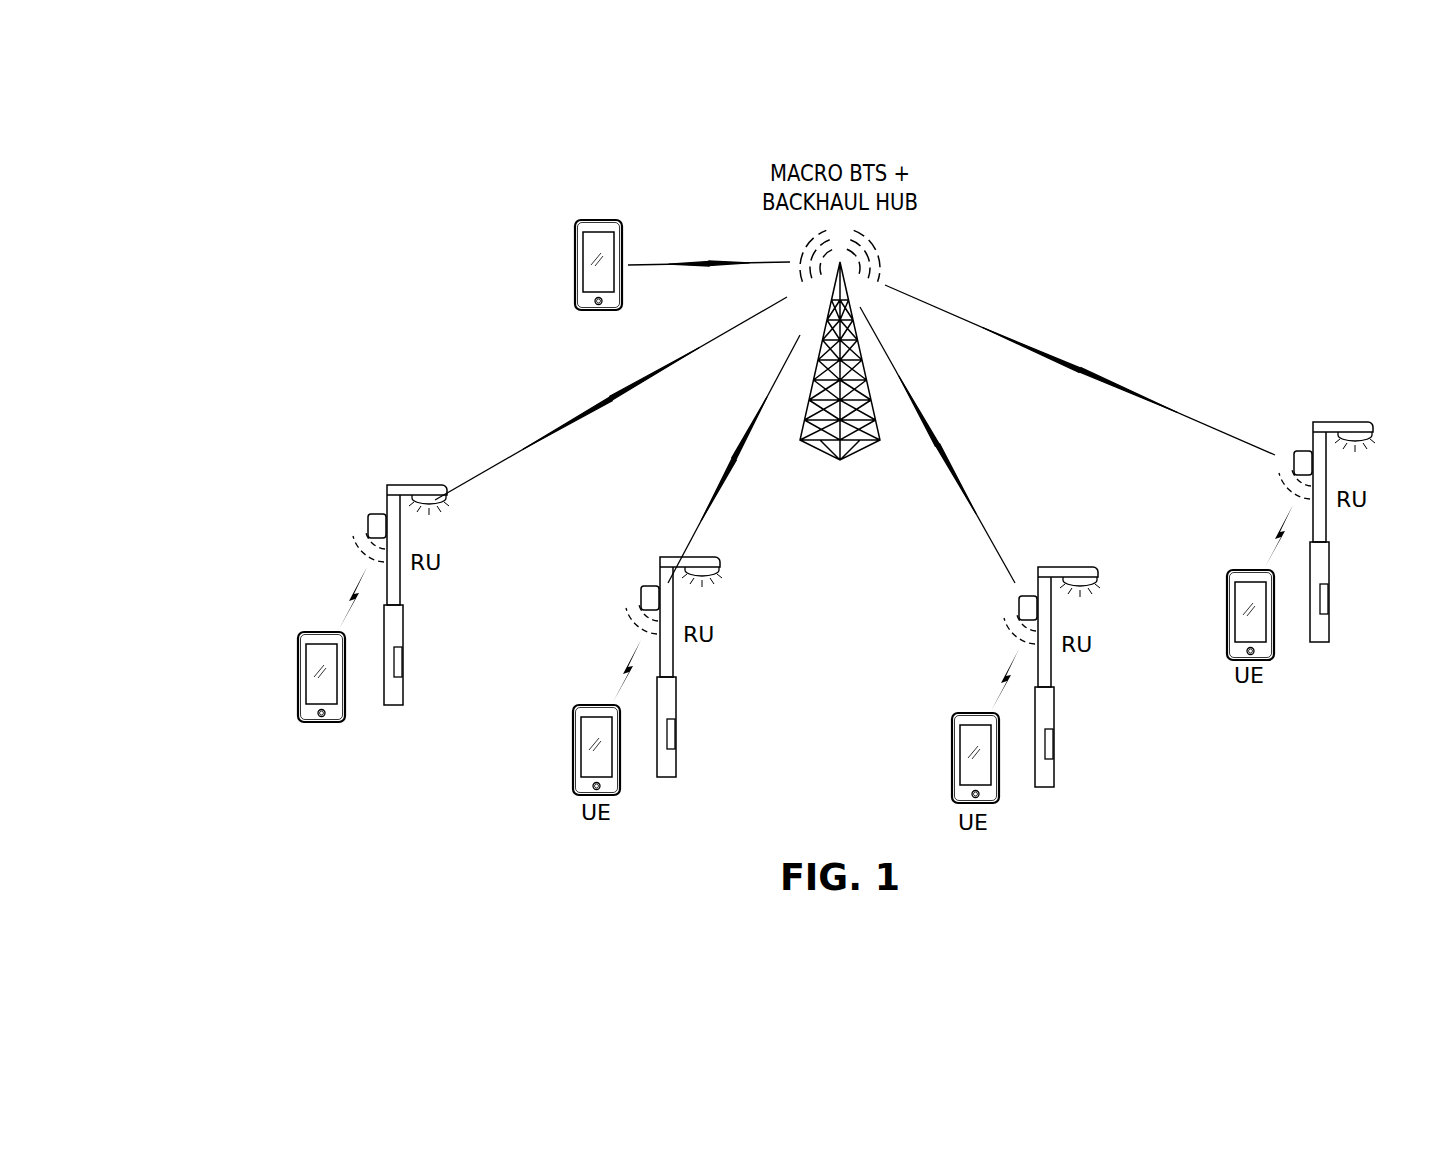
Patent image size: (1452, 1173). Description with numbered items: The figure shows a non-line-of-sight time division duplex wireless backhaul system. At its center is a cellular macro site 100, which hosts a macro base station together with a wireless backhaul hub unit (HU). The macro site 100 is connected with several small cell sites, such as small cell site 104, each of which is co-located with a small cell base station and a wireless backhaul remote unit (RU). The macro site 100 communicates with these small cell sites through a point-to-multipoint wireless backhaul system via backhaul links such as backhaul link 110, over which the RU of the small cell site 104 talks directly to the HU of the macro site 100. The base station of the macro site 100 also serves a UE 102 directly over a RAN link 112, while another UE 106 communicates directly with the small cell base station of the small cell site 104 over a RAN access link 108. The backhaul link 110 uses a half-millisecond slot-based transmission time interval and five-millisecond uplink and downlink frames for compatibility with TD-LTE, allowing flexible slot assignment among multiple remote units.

The cellular macro site 100 is at (855, 448).
The UE 102 is at (577, 252).
The small cell site 104 is at (367, 525).
The UE 106 is at (298, 675).
The RAN access link 108 is at (340, 620).
The backhaul link 110 is at (547, 437).
The RAN link 112 is at (672, 262).